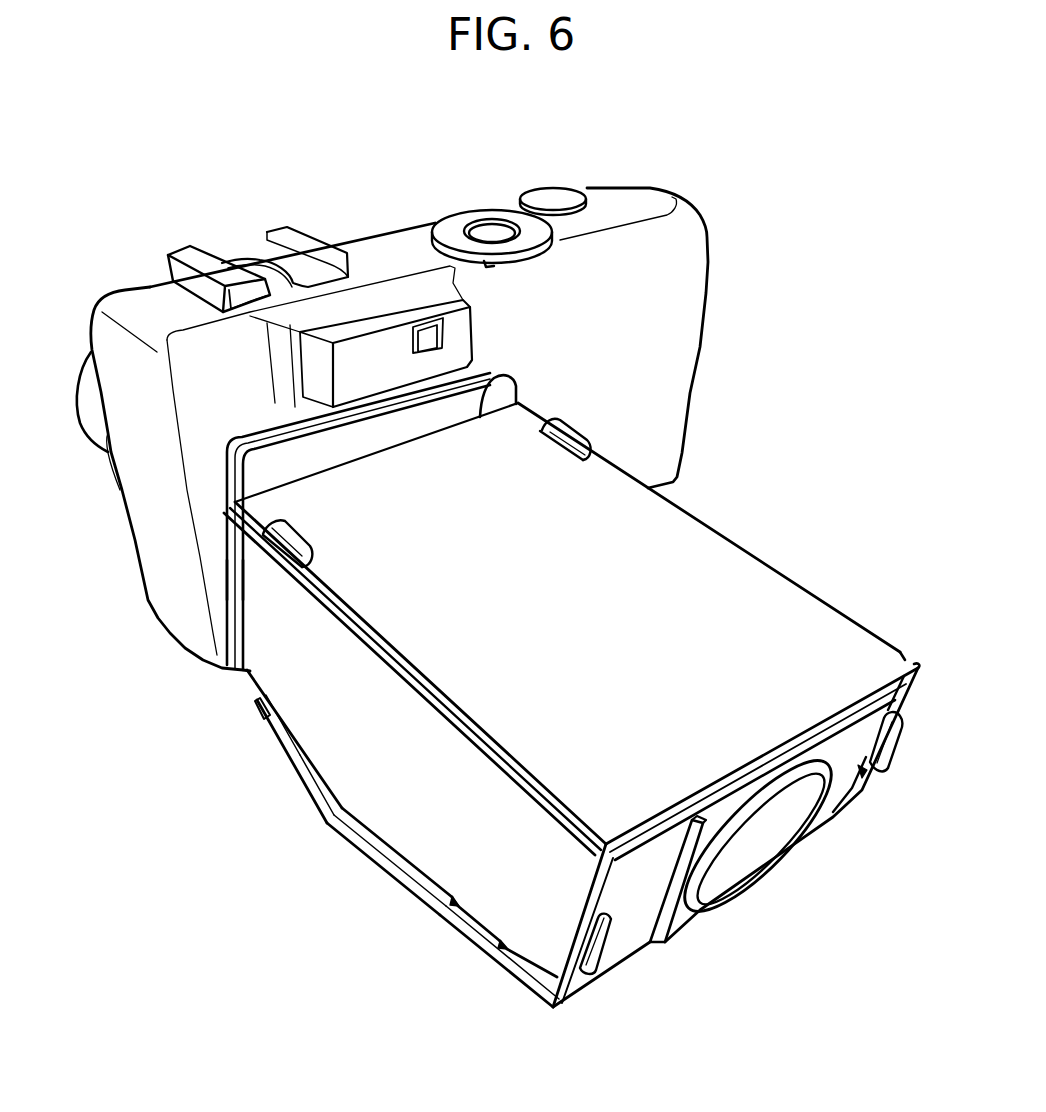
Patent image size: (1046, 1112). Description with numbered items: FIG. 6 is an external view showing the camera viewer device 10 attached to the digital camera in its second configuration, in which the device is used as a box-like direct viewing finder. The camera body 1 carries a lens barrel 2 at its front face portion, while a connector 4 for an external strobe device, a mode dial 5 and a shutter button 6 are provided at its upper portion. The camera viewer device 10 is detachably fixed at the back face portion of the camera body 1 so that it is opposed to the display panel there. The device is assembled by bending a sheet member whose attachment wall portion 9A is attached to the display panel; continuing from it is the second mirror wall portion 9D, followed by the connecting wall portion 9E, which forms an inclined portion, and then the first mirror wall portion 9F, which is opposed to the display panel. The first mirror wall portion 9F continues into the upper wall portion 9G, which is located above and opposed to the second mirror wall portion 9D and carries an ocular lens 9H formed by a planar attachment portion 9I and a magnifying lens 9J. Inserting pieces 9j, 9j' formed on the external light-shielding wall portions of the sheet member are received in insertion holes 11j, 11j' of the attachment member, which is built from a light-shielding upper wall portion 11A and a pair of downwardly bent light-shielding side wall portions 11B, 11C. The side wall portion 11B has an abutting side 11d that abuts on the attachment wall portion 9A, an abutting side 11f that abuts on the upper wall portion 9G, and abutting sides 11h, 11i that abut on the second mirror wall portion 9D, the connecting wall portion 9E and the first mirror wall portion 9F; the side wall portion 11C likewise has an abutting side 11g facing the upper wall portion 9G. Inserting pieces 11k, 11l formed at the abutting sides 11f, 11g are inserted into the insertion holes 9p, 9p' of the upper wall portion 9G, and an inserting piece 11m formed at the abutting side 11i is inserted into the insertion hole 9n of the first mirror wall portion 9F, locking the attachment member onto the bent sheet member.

The camera body 1 is at (366, 258).
The lens barrel 2 is at (91, 428).
The connector for an external strobe device 4 is at (192, 253).
The mode dial 5 is at (487, 220).
The shutter button 6 is at (551, 196).
The attachment wall portion 9A is at (507, 395).
The second mirror wall portion 9D is at (290, 763).
The connecting wall portion 9E is at (363, 840).
The first mirror wall portion 9F is at (447, 910).
The upper wall portion 9G is at (635, 940).
The ocular lens 9H is at (803, 930).
The planar attachment portion 9I is at (703, 917).
The magnifying lens 9J is at (760, 862).
The inserting piece 9j is at (295, 524).
The inserting piece 9j' is at (583, 434).
The insertion hole 9n is at (476, 919).
The insertion hole 9p is at (596, 971).
The insertion hole 9p' is at (886, 771).
The camera viewer device 10 is at (735, 520).
The light-shielding upper wall portion 11A is at (776, 576).
The light-shielding side wall portion 11B is at (330, 823).
The light-shielding side wall portion 11C is at (477, 418).
The abutting side 11d is at (233, 548).
The abutting side 11f is at (603, 848).
The abutting side 11g is at (903, 648).
The abutting side 11h is at (268, 733).
The abutting side 11i is at (410, 863).
The insertion hole 11j is at (314, 544).
The insertion hole 11j' is at (602, 445).
The inserting piece 11k is at (612, 947).
The inserting piece 11l is at (897, 742).
The inserting piece 11m is at (497, 967).